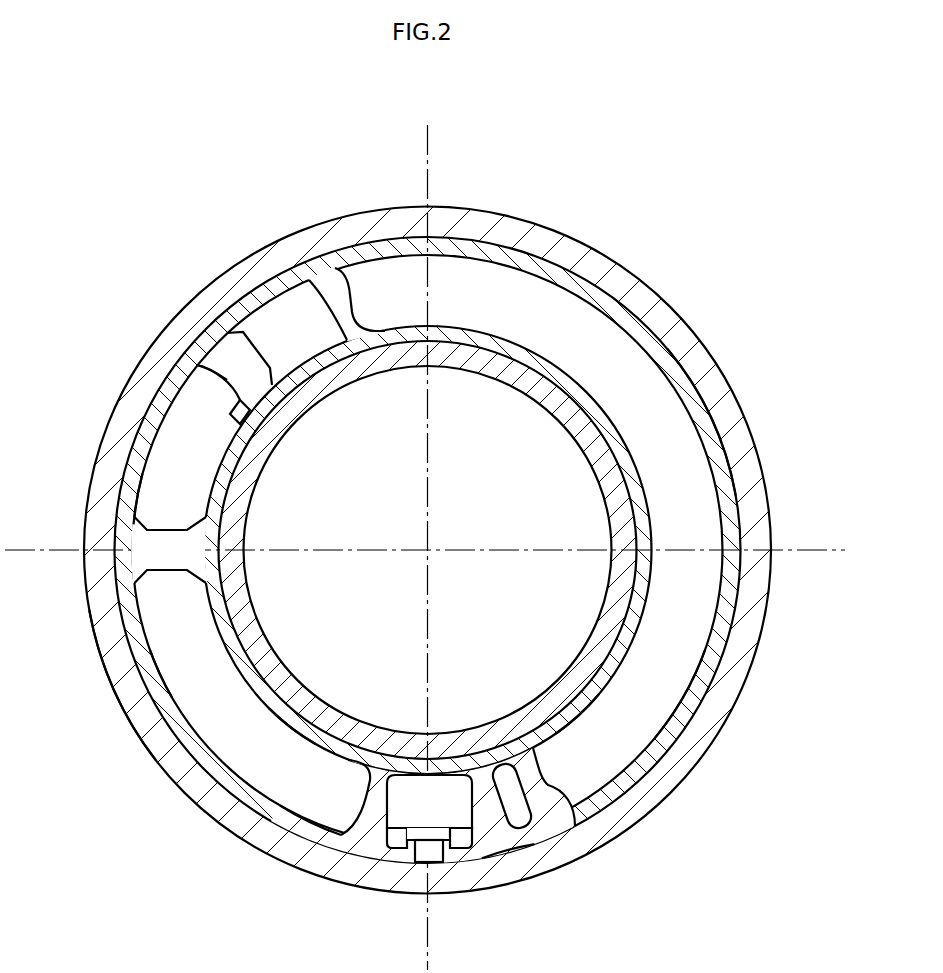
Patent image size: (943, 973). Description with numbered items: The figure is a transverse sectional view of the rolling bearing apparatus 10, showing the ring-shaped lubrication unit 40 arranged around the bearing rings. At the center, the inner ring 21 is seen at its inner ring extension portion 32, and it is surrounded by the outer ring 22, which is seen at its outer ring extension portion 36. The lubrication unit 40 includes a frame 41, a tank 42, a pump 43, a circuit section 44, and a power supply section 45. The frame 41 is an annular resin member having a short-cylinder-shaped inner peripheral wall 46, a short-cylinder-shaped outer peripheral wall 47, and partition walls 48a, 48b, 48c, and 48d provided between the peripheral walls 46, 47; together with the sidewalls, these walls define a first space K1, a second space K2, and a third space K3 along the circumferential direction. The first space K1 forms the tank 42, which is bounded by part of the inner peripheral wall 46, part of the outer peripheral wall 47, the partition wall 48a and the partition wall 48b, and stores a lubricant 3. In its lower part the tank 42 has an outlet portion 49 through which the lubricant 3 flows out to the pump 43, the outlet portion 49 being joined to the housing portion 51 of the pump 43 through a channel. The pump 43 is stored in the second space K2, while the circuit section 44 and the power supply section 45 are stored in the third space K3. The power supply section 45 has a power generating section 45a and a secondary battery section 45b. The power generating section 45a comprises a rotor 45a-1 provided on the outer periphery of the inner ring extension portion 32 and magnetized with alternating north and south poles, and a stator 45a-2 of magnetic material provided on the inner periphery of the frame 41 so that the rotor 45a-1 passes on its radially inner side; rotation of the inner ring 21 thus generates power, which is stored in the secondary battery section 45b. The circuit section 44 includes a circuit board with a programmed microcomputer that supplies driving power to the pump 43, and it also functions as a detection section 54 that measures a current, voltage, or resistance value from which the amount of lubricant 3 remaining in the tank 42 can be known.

The rolling bearing apparatus 10 is at (643, 270).
The lubrication unit 40 is at (511, 240).
The frame 41 is at (330, 292).
The tank 42 is at (690, 413).
The first space K1 is at (428, 550).
The partition wall 48b is at (353, 318).
The lubricant 3 is at (609, 372).
The inner ring 21 is at (308, 671).
The inner ring extension portion 32 is at (258, 650).
The power supply section 45 is at (168, 445).
The power generating section 45a is at (205, 406).
The rotor 45a-1 is at (176, 352).
The stator 45a-2 is at (242, 422).
The secondary battery section 45b is at (158, 500).
The third space K3 is at (150, 563).
The outer ring extension portion 36 is at (115, 657).
The outer ring 22 is at (122, 729).
The circuit section 44 is at (238, 737).
The detection section 54 is at (187, 647).
The pump 43 is at (390, 820).
The partition wall 48c is at (372, 807).
The partition wall 48a is at (560, 790).
The partition wall 48d is at (520, 765).
The housing portion 51 is at (420, 800).
The second space K2 is at (457, 846).
The outlet portion 49 is at (532, 798).
The inner peripheral wall 46 is at (580, 708).
The outer peripheral wall 47 is at (693, 698).